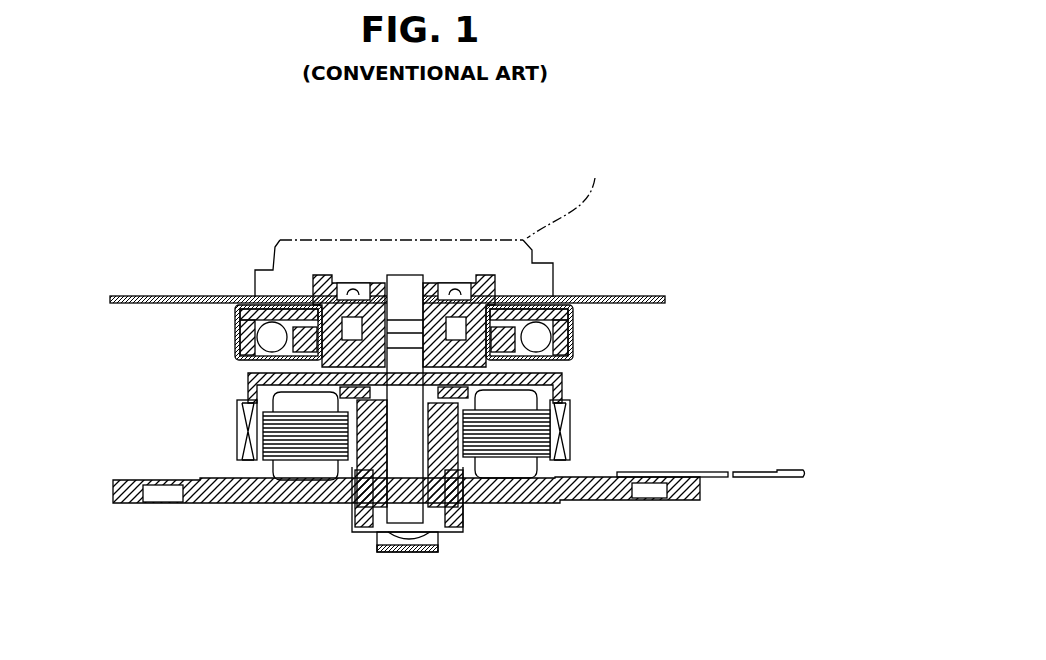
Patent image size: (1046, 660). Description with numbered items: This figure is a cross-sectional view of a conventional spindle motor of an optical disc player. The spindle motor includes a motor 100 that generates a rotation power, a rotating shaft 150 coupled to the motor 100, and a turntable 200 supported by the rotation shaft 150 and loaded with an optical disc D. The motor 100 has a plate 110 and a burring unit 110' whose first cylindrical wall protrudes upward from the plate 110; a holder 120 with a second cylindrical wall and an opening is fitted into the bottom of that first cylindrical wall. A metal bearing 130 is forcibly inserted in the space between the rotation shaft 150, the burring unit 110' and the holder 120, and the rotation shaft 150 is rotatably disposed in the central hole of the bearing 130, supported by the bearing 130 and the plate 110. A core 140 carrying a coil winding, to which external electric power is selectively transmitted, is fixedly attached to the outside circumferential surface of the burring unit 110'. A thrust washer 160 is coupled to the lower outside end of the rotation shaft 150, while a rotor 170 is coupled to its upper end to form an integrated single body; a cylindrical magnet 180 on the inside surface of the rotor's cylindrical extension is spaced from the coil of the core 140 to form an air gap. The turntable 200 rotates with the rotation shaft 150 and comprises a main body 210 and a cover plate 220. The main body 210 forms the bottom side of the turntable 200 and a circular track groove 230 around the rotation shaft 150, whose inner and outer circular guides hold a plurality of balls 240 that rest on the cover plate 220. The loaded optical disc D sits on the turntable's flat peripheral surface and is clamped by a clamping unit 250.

The motor 100 is at (198, 447).
The plate 110 is at (421, 528).
The burring unit 110' is at (655, 519).
The holder 120 is at (460, 528).
The metal bearing 130 is at (333, 462).
The core 140 is at (560, 383).
The rotating shaft 150 is at (404, 305).
The thrust washer 160 is at (365, 500).
The rotor 170 is at (250, 402).
The cylindrical magnet 180 is at (573, 416).
The turntable 200 is at (572, 262).
The main body 210 is at (588, 312).
The cover plate 220 is at (573, 350).
The track groove 230 is at (240, 310).
The balls 240 is at (246, 340).
The clamping unit 250 is at (572, 198).
The optical disc D is at (655, 292).